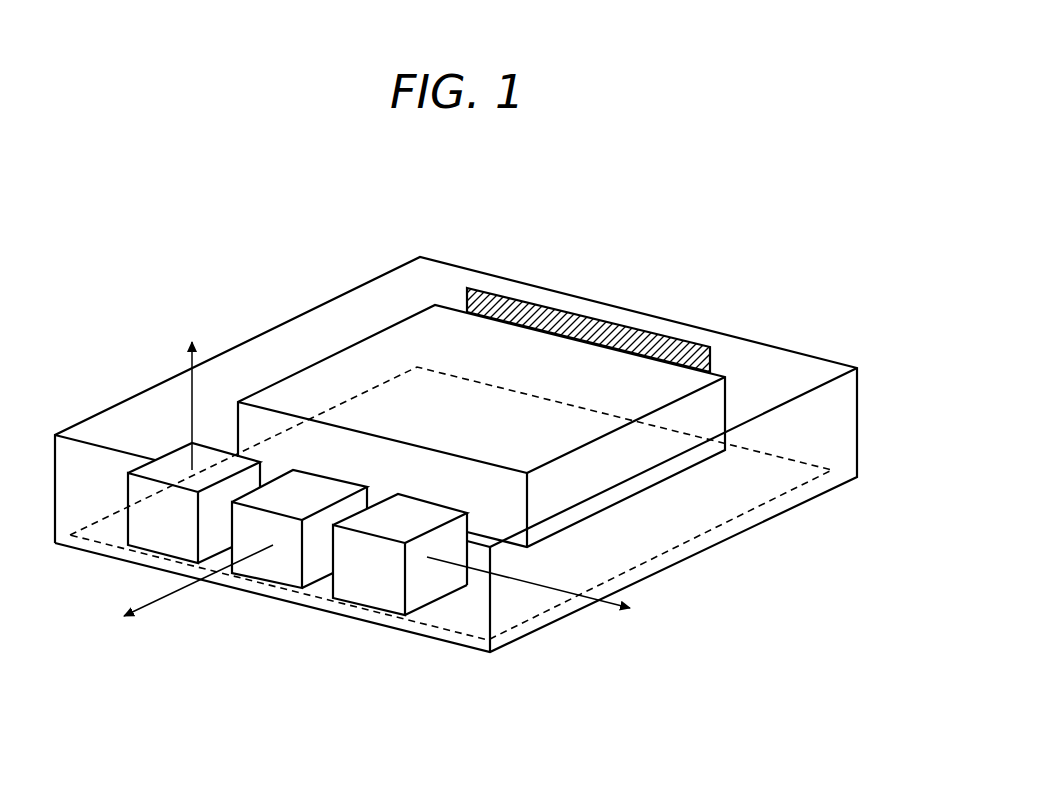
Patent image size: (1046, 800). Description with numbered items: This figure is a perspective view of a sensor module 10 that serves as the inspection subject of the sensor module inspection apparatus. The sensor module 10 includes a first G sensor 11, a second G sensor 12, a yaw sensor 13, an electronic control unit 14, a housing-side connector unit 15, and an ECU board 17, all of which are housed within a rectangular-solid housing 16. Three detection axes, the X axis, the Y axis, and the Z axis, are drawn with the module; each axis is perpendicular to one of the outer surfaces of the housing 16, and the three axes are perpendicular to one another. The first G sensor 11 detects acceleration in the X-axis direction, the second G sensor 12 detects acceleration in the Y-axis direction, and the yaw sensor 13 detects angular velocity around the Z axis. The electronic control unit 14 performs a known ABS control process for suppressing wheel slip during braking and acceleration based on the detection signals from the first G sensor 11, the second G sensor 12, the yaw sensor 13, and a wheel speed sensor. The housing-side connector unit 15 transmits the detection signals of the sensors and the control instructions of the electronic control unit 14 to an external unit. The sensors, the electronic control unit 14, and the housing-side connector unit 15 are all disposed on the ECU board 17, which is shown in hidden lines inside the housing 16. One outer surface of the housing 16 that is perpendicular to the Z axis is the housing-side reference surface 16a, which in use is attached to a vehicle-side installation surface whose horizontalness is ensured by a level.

The sensor module 10 is at (654, 205).
The first G sensor 11 is at (270, 570).
The second G sensor 12 is at (163, 542).
The yaw sensor 13 is at (370, 593).
The electronic control unit 14 is at (384, 350).
The housing-side connector unit 15 is at (603, 331).
The housing 16 is at (776, 365).
The housing-side reference surface 16a is at (698, 512).
The ECU board 17 is at (783, 473).